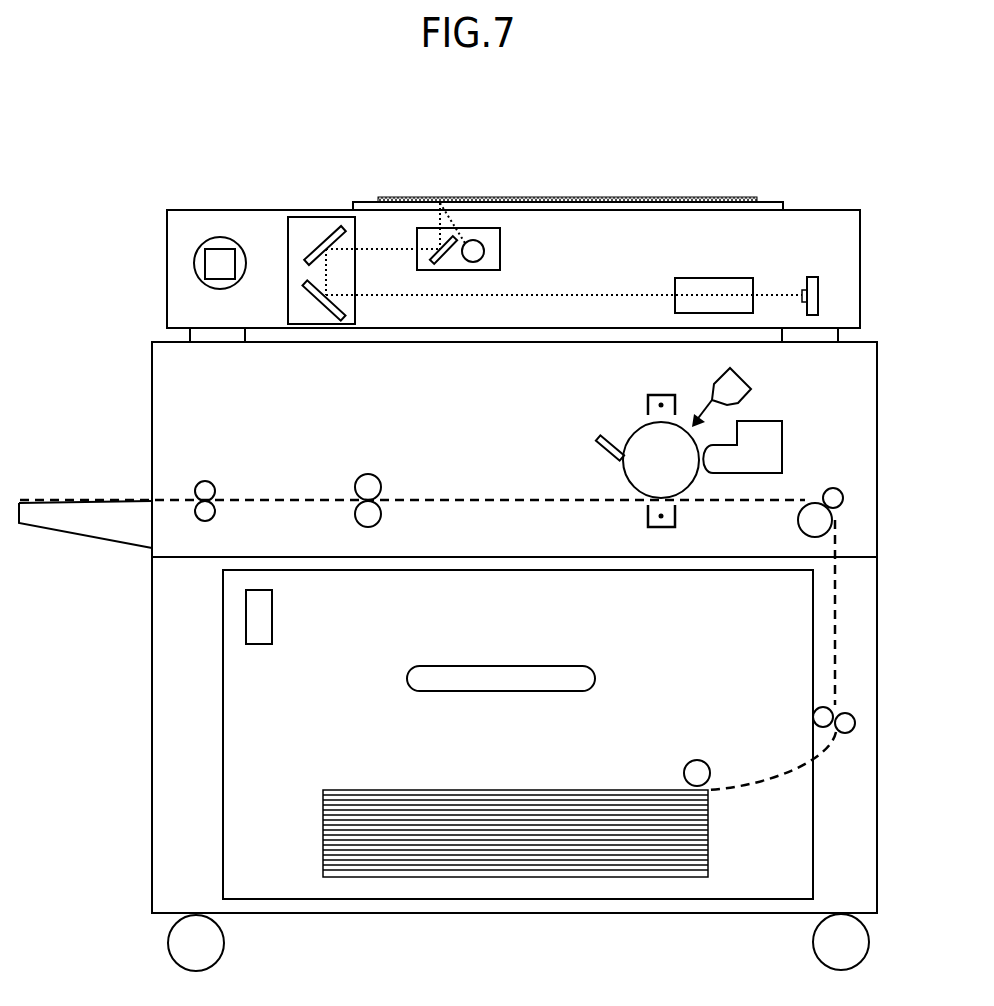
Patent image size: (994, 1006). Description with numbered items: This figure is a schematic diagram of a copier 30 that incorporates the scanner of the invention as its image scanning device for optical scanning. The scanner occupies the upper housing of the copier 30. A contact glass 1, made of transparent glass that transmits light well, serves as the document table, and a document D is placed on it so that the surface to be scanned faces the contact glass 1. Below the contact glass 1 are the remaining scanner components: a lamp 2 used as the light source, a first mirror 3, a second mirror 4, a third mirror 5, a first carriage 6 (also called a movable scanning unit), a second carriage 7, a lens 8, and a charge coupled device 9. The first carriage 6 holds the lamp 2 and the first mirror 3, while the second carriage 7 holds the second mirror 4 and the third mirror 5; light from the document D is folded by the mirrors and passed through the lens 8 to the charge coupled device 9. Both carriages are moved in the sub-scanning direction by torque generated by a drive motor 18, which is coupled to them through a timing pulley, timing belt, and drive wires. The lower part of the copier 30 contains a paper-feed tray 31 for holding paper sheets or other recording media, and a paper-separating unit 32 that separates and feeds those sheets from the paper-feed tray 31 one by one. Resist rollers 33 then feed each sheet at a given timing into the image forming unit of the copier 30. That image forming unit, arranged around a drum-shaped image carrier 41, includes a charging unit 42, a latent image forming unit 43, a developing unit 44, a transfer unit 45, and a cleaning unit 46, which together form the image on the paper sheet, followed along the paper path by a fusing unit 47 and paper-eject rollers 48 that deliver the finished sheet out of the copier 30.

The contact glass 1 is at (763, 208).
The document D is at (621, 197).
The lamp 2 is at (480, 240).
The first mirror 3 is at (461, 240).
The second mirror 4 is at (343, 228).
The third mirror 5 is at (308, 280).
The first carriage 6 is at (498, 230).
The second carriage 7 is at (355, 212).
The lens 8 is at (753, 285).
The charge coupled device 9 is at (818, 285).
The drive motor 18 is at (193, 263).
The copier 30 is at (600, 930).
The paper-feed tray 31 is at (222, 716).
The paper-separating unit 32 is at (697, 760).
The resist rollers 33 is at (808, 535).
The image carrier 41 is at (693, 488).
The charging unit 42 is at (648, 408).
The latent image forming unit 43 is at (752, 388).
The developing unit 44 is at (782, 460).
The transfer unit 45 is at (648, 516).
The cleaning unit 46 is at (598, 438).
The fusing unit 47 is at (367, 473).
The paper-eject rollers 48 is at (203, 480).